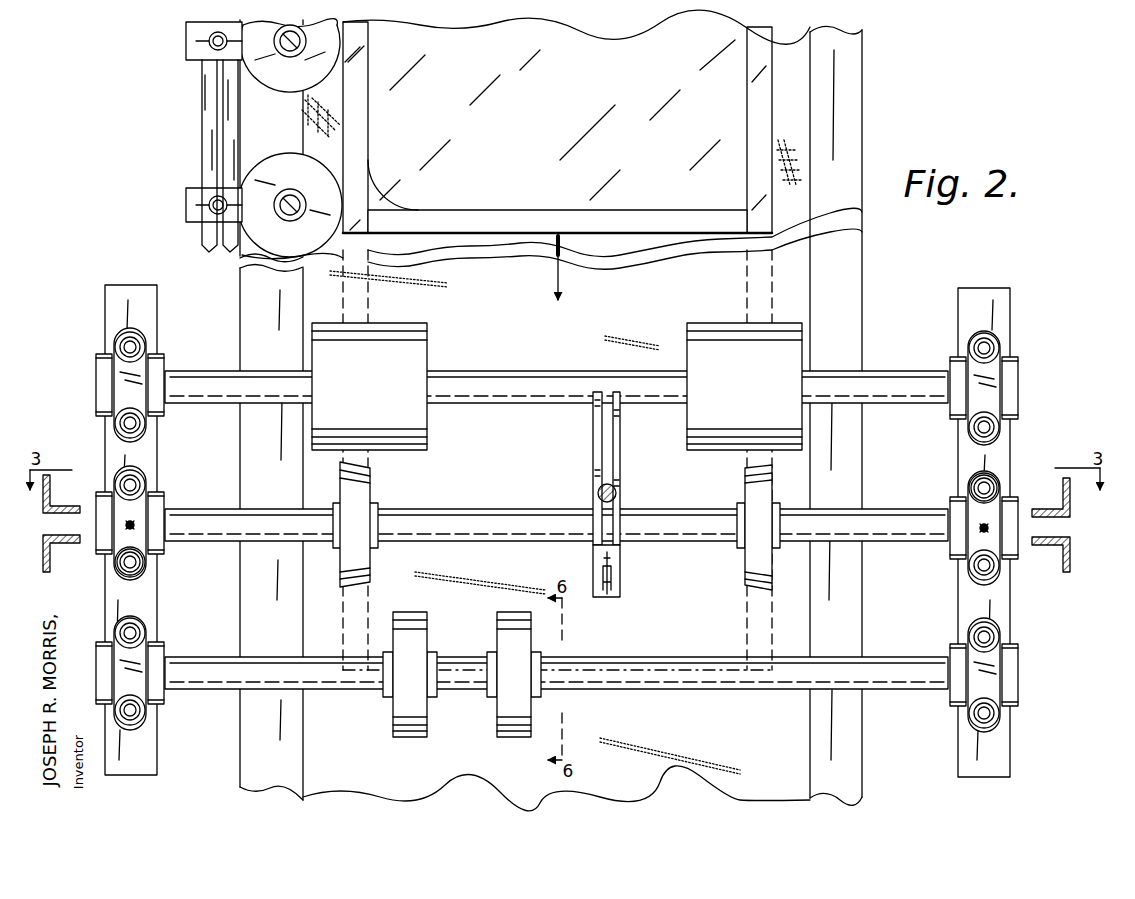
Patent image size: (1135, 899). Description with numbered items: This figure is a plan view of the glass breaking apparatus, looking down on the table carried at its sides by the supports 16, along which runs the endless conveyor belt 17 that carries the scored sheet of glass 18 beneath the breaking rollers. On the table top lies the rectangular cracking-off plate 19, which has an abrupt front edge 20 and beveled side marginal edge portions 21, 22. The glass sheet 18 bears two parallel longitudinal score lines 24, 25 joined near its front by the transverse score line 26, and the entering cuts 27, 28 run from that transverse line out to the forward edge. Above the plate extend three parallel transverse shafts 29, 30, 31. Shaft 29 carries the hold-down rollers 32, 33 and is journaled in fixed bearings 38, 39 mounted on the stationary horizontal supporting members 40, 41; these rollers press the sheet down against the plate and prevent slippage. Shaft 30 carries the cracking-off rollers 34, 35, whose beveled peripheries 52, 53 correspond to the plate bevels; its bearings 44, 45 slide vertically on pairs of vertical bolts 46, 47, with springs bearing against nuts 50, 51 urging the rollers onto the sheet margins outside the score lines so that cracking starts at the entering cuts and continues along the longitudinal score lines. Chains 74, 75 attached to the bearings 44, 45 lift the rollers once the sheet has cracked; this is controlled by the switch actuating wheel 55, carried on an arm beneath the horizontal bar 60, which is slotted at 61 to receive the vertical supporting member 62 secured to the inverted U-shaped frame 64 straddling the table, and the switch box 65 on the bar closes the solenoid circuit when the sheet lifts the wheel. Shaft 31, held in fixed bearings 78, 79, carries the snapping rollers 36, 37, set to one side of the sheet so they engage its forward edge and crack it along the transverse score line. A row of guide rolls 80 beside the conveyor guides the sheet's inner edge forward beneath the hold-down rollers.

The support 16 is at (252, 738).
The endless conveyor belt 17 is at (318, 613).
The scored sheet of glass 18 is at (576, 121).
The cracking-off plate 19 is at (775, 628).
The abrupt front edge 20 is at (620, 672).
The beveled marginal edge portion 21 is at (747, 620).
The beveled marginal edge portion 22 is at (362, 618).
The score line 24 is at (746, 144).
The score line 25 is at (368, 88).
The transverse score line 26 is at (543, 210).
The entering cut 27 is at (745, 218).
The entering cut 28 is at (370, 221).
The shaft 29 is at (496, 385).
The shaft 30 is at (490, 526).
The shaft 31 is at (702, 683).
The hold-down roller 32 is at (724, 336).
The hold-down roller 33 is at (384, 340).
The cracking-off roller 34 is at (744, 561).
The cracking-off roller 35 is at (378, 556).
The snapping roller 36 is at (512, 722).
The snapping roller 37 is at (415, 736).
The fixed bearing 38 is at (990, 396).
The fixed bearing 39 is at (123, 387).
The horizontal supporting member 40 is at (998, 458).
The horizontal supporting member 41 is at (118, 458).
The bearing 44 is at (975, 521).
The bearing 45 is at (137, 533).
The vertical bolt 46 is at (966, 487).
The vertical bolt 47 is at (113, 485).
The nut 50 is at (978, 472).
The nut 51 is at (138, 580).
The beveled periphery 52 is at (739, 527).
The beveled periphery 53 is at (377, 524).
The switch actuating wheel 55 is at (604, 598).
The horizontal bar 60 is at (625, 505).
The slot 61 is at (604, 452).
The vertical supporting member 62 is at (617, 493).
The inverted U-shaped frame 64 is at (1052, 547).
The switch box 65 is at (622, 556).
The chain 74 is at (990, 523).
The chain 75 is at (135, 520).
The fixed bearing 78 is at (975, 696).
The fixed bearing 79 is at (117, 656).
The guide roll 80 is at (290, 156).